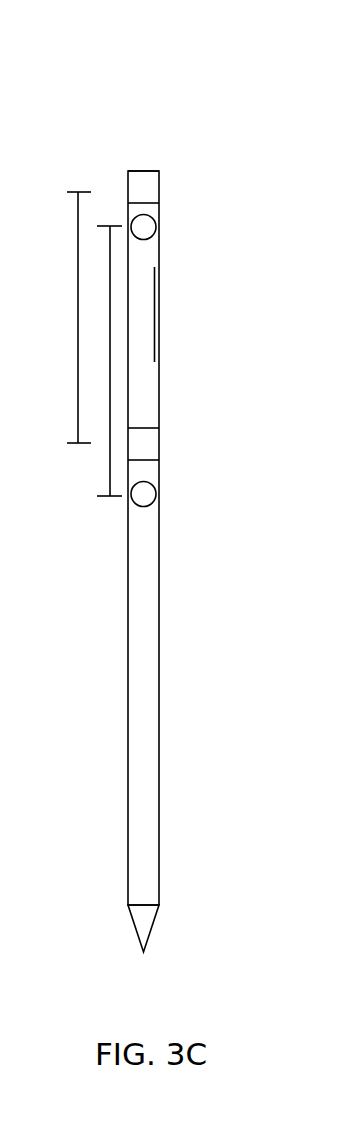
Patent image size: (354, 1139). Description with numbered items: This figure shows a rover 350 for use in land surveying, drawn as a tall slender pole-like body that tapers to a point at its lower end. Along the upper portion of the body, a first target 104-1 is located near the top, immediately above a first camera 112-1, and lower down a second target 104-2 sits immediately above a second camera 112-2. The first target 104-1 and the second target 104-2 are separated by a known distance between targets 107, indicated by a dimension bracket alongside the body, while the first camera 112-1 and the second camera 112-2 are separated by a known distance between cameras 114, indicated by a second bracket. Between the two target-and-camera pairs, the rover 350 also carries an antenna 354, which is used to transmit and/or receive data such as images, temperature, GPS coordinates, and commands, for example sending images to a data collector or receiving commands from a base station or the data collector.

The rover 350 is at (139, 122).
The first target 104-1 is at (159, 182).
The first camera 112-1 is at (156, 211).
The antenna 354 is at (155, 308).
The second target 104-2 is at (158, 437).
The second camera 112-2 is at (156, 481).
The distance between targets 107 is at (78, 248).
The distance between cameras 114 is at (108, 460).